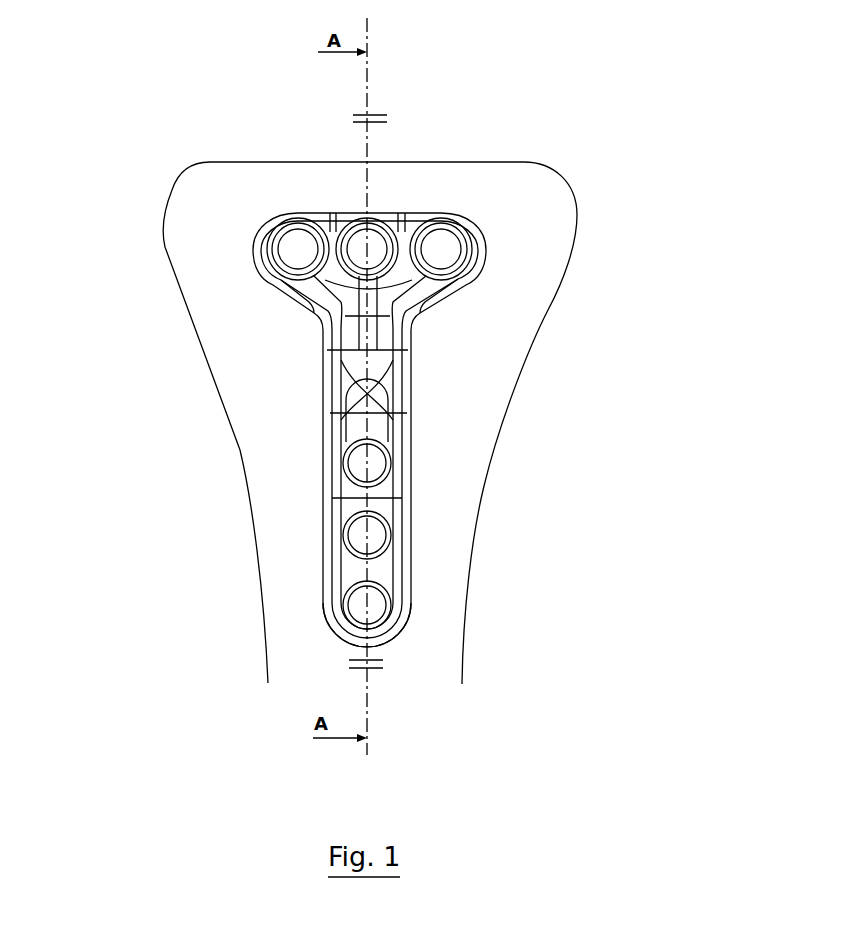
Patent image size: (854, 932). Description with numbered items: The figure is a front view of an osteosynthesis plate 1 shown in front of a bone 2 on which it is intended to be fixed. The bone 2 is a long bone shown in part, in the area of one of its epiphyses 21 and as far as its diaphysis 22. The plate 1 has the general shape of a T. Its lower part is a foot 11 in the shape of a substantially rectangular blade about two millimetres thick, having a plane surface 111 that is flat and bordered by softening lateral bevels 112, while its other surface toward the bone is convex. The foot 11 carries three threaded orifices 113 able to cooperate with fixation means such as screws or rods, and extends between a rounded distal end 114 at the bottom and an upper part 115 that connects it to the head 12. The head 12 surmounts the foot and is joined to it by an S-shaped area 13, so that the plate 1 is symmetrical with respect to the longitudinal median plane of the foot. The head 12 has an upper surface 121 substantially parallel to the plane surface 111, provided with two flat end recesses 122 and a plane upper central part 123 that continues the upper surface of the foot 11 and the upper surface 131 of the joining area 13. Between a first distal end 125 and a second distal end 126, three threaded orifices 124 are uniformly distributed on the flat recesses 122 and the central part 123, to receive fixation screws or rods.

The plate 1 is at (291, 178).
The bone 2 is at (158, 192).
The foot 11 is at (312, 485).
The head 12 is at (302, 315).
The S-shaped area 13 is at (402, 296).
The epiphysis 21 is at (213, 238).
The diaphysis 22 is at (290, 606).
The plane surface 111 is at (386, 432).
The lateral bevels 112 is at (328, 536).
The threaded orifices 113 is at (386, 540).
The rounded distal end 114 is at (401, 653).
The upper part 115 is at (420, 362).
The upper surface 121 is at (414, 209).
The flat end recesses 122 is at (270, 229).
The plane upper central part 123 is at (356, 210).
The threaded orifices 124 is at (300, 240).
The first distal end 125 is at (245, 231).
The second distal end 126 is at (492, 259).
The upper surface of the joining area 131 is at (358, 335).